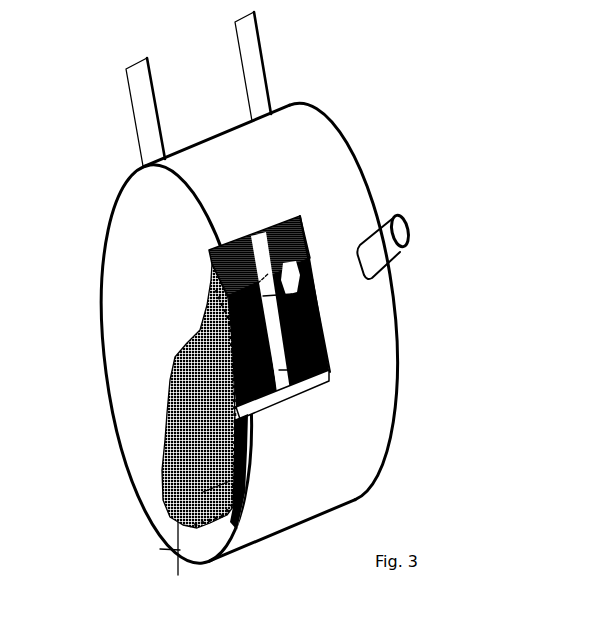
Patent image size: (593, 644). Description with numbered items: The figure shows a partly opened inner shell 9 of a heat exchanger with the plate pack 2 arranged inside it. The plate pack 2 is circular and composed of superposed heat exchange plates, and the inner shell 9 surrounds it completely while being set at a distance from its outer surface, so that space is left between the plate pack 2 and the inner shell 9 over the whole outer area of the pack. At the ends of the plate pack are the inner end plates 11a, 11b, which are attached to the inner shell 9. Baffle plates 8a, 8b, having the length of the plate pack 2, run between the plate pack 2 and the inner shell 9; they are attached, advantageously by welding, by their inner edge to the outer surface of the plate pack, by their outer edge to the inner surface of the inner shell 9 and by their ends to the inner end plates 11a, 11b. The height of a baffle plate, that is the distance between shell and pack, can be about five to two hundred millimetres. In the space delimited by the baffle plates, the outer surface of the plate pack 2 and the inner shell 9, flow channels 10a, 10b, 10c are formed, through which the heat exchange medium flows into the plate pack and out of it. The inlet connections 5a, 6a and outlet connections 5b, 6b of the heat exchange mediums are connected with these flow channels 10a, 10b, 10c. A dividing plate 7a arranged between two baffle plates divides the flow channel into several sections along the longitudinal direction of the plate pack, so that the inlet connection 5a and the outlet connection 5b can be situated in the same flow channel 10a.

The plate pack 2 is at (247, 497).
The inlet connection 5a is at (322, 310).
The outlet connection 5b is at (380, 255).
The inlet connection 6a is at (252, 58).
The outlet connection 6b is at (143, 98).
The dividing plate 7a is at (320, 378).
The baffle plate 8a is at (160, 549).
The baffle plate 8b is at (270, 402).
The inner shell 9 is at (337, 157).
The flow channel 10a is at (307, 243).
The flow channel 10b is at (160, 527).
The flow channel 10c is at (193, 550).
The inner end plate 11a is at (118, 323).
The inner end plate 11b is at (393, 303).